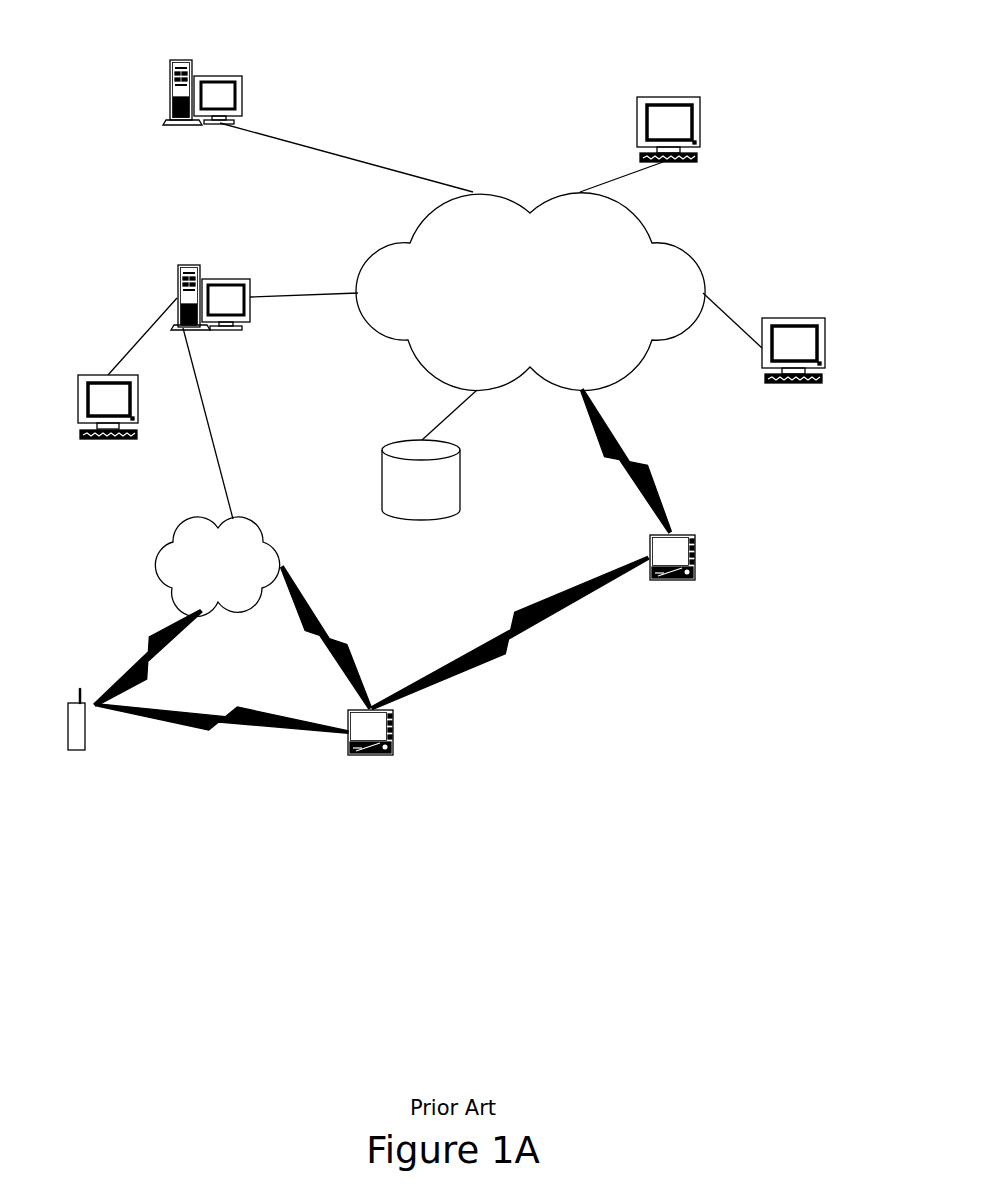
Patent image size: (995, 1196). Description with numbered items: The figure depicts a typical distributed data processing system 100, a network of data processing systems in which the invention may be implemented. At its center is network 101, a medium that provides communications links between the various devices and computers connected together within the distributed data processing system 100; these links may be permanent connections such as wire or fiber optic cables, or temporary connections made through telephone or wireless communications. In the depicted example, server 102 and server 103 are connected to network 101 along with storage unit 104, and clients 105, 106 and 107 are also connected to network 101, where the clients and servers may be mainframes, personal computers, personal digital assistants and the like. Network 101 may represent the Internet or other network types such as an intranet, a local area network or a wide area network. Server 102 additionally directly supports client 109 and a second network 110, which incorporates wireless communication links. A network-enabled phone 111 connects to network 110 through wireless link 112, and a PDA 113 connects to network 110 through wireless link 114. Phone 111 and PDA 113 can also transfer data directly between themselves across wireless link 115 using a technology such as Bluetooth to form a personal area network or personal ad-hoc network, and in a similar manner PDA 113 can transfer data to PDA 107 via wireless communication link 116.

The distributed data processing system 100 is at (827, 147).
The network 101 is at (513, 313).
The server 102 is at (188, 265).
The server 103 is at (178, 61).
The storage unit 104 is at (382, 478).
The client 105 is at (670, 97).
The client 106 is at (795, 318).
The PDA 107 is at (698, 553).
The client 109 is at (77, 407).
The network 110 is at (203, 586).
The network-enabled phone 111 is at (70, 703).
The wireless link 112 is at (148, 658).
The PDA 113 is at (395, 732).
The wireless link 114 is at (326, 637).
The wireless link 115 is at (223, 705).
The wireless communication link 116 is at (509, 633).